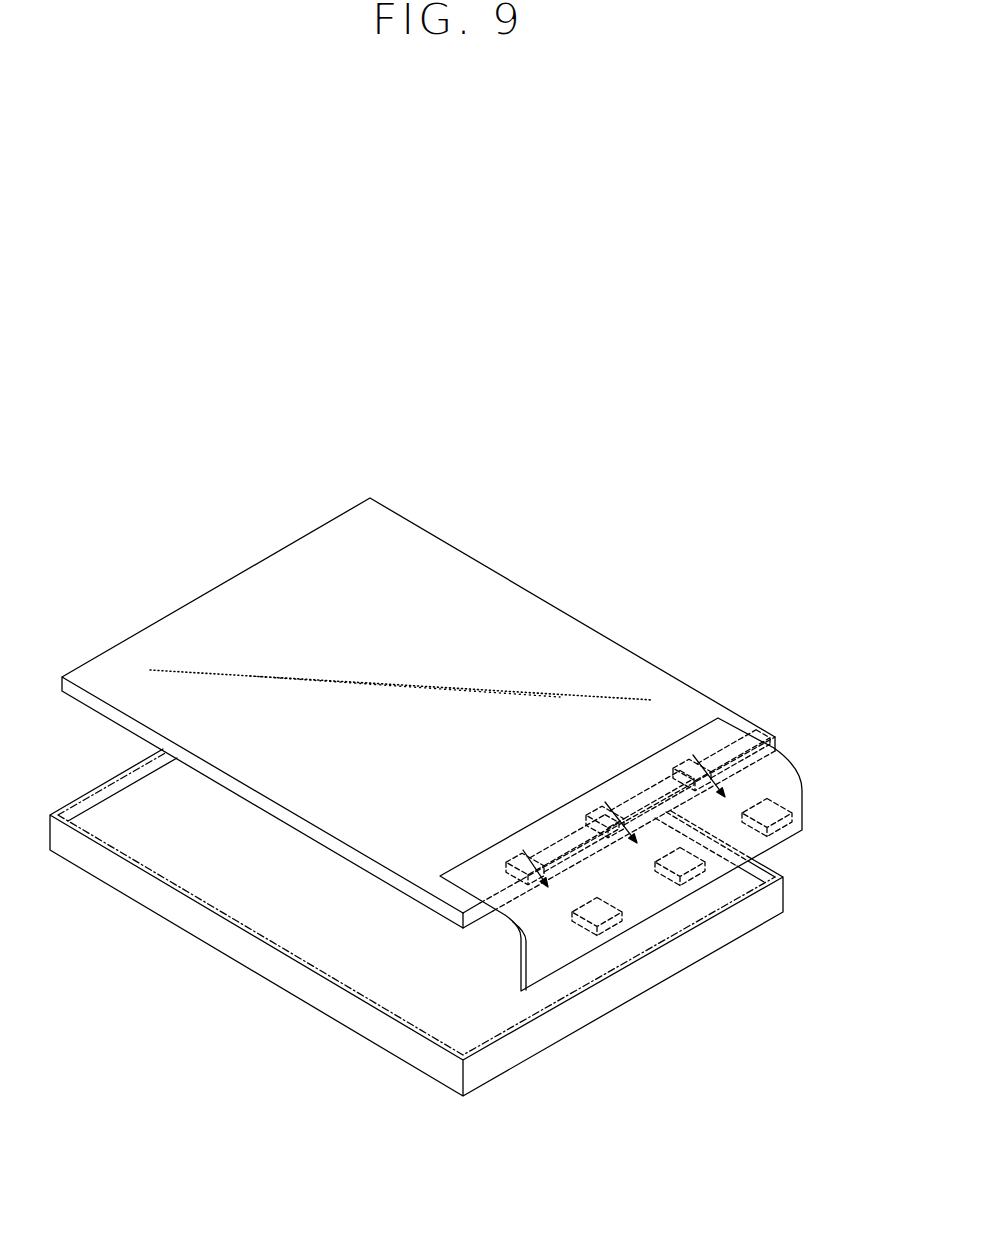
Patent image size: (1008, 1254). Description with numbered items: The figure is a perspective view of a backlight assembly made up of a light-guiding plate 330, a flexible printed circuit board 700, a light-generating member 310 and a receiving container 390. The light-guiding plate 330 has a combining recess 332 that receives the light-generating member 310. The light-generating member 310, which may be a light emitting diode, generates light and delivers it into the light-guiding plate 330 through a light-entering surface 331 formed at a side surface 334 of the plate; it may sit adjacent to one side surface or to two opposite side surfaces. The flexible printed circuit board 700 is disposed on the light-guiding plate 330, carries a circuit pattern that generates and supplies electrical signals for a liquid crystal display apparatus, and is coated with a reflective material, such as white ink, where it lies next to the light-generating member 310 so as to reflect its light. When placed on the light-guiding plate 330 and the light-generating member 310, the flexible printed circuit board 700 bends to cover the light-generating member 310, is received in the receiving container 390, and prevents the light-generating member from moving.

The light-guiding plate 330 is at (584, 645).
The light-entering surface 331 is at (523, 888).
The combining recess 332 is at (538, 872).
The side surface 334 is at (466, 929).
The light-generating member 310 is at (622, 928).
The receiving container 390 is at (776, 901).
The flexible printed circuit board 700 is at (792, 790).